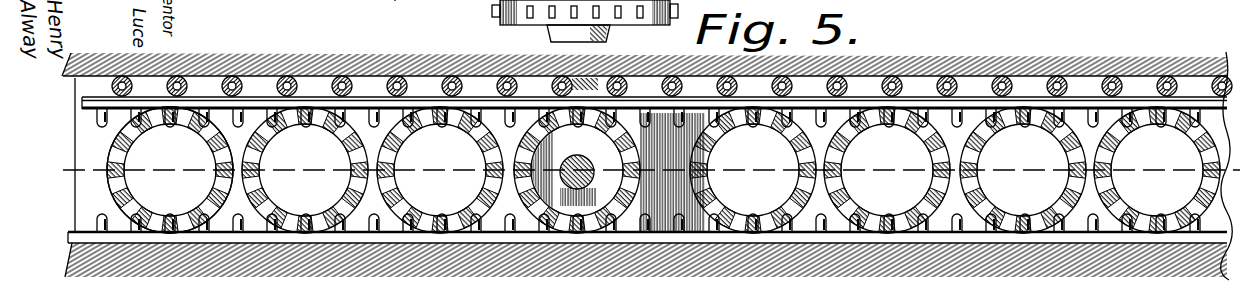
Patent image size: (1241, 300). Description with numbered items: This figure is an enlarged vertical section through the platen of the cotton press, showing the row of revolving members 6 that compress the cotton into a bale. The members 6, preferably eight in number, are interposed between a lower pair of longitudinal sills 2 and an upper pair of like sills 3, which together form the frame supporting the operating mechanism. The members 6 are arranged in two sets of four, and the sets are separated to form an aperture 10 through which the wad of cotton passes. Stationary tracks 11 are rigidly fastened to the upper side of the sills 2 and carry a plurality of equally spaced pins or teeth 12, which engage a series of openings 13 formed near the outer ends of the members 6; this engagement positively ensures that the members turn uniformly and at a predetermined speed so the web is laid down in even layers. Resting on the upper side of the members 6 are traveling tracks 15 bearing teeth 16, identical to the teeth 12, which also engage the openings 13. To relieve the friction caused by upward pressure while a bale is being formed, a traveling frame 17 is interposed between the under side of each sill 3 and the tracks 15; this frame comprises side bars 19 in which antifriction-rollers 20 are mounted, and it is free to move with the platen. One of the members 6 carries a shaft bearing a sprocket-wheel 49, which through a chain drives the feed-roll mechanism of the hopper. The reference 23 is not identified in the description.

The longitudinal sills 2 is at (646, 262).
The sills 3 is at (84, 63).
The revolving members 6 is at (663, 170).
The aperture 10 is at (674, 160).
The stationary tracks 11 is at (72, 243).
The pins or teeth 12 is at (106, 220).
The openings 13 is at (213, 143).
The traveling tracks 15 is at (82, 100).
The teeth 16 is at (94, 114).
The traveling frame 17 is at (485, 79).
The side bars 19 is at (575, 80).
The antifriction-rollers 20 is at (294, 77).
The part 23 is at (390, 7).
The sprocket-wheel 49 is at (492, 12).